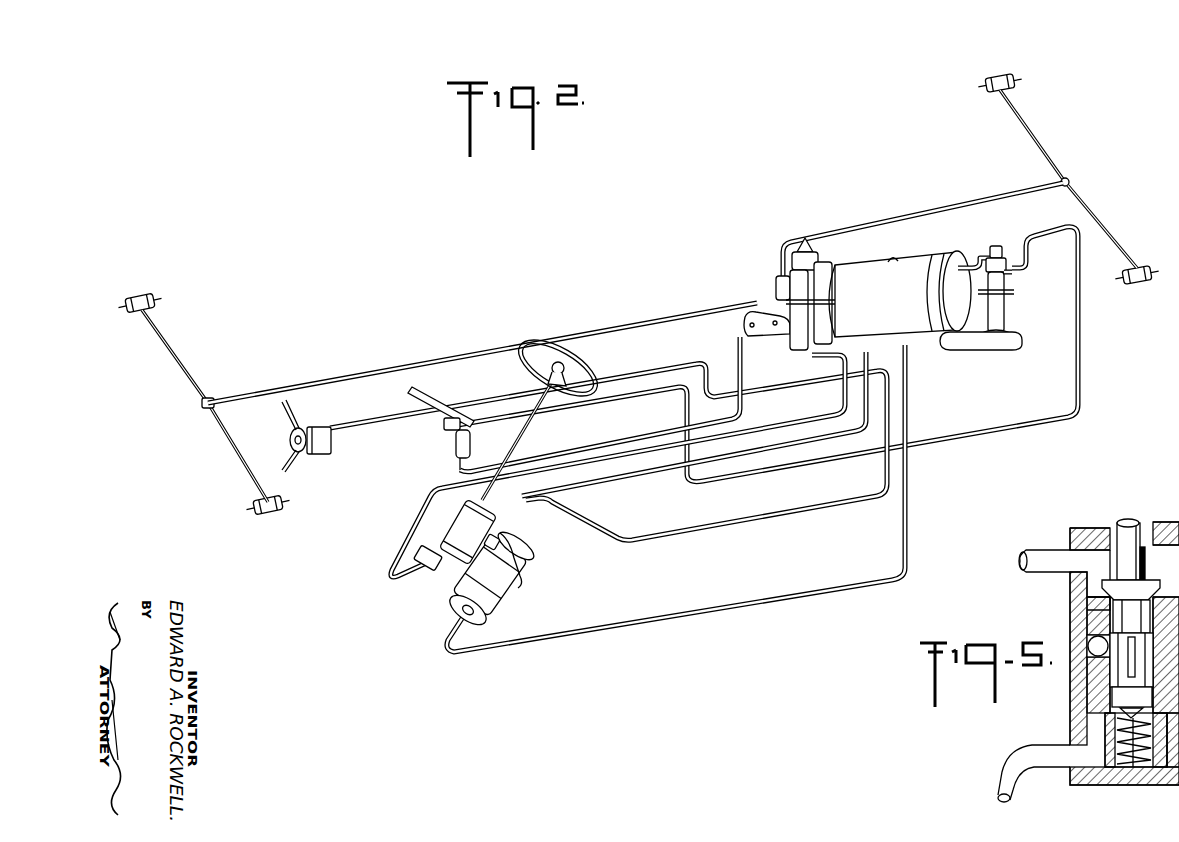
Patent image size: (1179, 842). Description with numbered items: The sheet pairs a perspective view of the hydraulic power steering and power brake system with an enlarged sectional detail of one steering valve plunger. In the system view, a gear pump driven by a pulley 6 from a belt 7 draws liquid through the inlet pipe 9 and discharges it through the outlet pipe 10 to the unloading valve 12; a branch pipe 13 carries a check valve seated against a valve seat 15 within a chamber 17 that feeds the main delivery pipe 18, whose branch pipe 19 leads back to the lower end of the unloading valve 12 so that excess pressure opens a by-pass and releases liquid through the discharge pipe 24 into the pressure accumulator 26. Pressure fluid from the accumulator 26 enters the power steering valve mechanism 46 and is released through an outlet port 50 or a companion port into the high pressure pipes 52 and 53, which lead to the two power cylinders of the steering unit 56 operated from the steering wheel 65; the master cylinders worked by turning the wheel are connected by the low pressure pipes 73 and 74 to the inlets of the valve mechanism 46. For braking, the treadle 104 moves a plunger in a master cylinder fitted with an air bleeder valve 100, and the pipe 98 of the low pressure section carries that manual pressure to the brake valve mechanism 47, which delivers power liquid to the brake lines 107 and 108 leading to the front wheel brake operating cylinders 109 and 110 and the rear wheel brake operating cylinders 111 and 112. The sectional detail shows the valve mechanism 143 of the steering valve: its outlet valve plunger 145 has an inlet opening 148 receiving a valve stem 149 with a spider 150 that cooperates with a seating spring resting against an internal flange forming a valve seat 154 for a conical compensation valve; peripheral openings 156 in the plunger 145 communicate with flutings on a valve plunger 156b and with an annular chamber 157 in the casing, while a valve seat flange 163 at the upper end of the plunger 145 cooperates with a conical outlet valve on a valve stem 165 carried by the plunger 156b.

In FIG. 2, the front wheel brake operating cylinder 109 is at (1000, 74).
In FIG. 2, the front wheel brake operating cylinder 110 is at (1142, 283).
In FIG. 2, the rear wheel brake operating cylinder 111 is at (142, 296).
In FIG. 2, the rear wheel brake operating cylinder 112 is at (268, 514).
In FIG. 2, the brake line 108 is at (377, 370).
In FIG. 2, the brake line 107 is at (970, 193).
In FIG. 2, the outlet pipe 10 is at (1033, 226).
In FIG. 2, the pipe 98 is at (582, 447).
In FIG. 2, the pipe 74 is at (782, 420).
In FIG. 2, the pipe 73 is at (832, 433).
In FIG. 2, the pipe 52 is at (910, 424).
In FIG. 2, the pipe 53 is at (910, 400).
In FIG. 2, the steering wheel 65 is at (592, 362).
In FIG. 2, the chamber 17 is at (325, 411).
In FIG. 2, the pulley 6 is at (288, 445).
In FIG. 2, the belt 7 is at (283, 420).
In FIG. 2, the treadle 104 is at (448, 400).
In FIG. 2, the air bleeder valve 100 is at (452, 440).
In FIG. 2, the brake valve mechanism 47 is at (766, 288).
In FIG. 2, the power steering valve mechanism 46 is at (828, 262).
In FIG. 2, the pressure accumulator 26 is at (919, 243).
In FIG. 2, the main supply or delivery pipe 18 is at (962, 298).
In FIG. 2, the branch pipe 19 is at (975, 316).
In FIG. 2, the discharge pipe 24 is at (976, 262).
In FIG. 2, the unloading valve 12 is at (1014, 259).
In FIG. 2, the branch pipe 13 is at (1022, 264).
In FIG. 2, the inlet pipe 9 is at (968, 345).
In FIG. 2, the steering unit 56 is at (542, 562).
In FIG. 5, the valve mechanism 143 is at (1107, 517).
In FIG. 5, the outlet port 50 is at (1034, 552).
In FIG. 5, the valve stem 165 is at (1143, 590).
In FIG. 5, the valve seat flange 163 is at (1088, 604).
In FIG. 5, the annular chamber 157 is at (1090, 642).
In FIG. 5, the peripheral openings 156 is at (1112, 668).
In FIG. 5, the valve plunger 156b is at (1112, 692).
In FIG. 5, the outlet valve plunger 145 is at (1118, 712).
In FIG. 5, the valve seat 154 is at (1105, 732).
In FIG. 5, the valve seat 15 is at (1003, 762).
In FIG. 5, the spider 150 is at (1092, 786).
In FIG. 5, the inlet opening 148 is at (1118, 786).
In FIG. 5, the valve stem 149 is at (1148, 786).